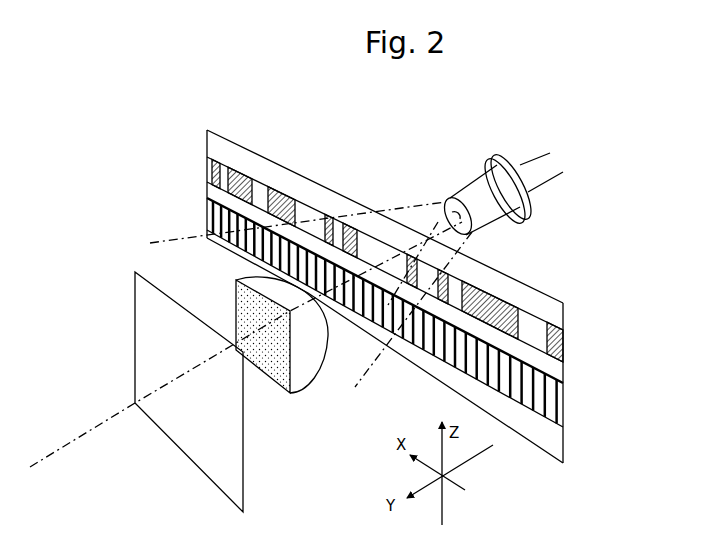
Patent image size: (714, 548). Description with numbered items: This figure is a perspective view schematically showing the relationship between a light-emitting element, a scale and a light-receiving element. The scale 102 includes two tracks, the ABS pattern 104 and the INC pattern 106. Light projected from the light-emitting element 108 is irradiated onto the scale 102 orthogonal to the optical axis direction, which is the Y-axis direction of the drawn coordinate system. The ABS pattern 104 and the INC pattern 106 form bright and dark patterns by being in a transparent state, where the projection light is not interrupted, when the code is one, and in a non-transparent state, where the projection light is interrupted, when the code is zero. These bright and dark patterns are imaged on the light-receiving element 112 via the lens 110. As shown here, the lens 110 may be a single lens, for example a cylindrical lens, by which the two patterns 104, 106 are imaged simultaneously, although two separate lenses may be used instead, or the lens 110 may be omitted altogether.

The scale 102 is at (312, 172).
The ABS pattern 104 is at (562, 345).
The INC pattern 106 is at (410, 315).
The light-emitting element 108 is at (525, 213).
The lens 110 is at (300, 362).
The light-receiving element 112 is at (236, 453).